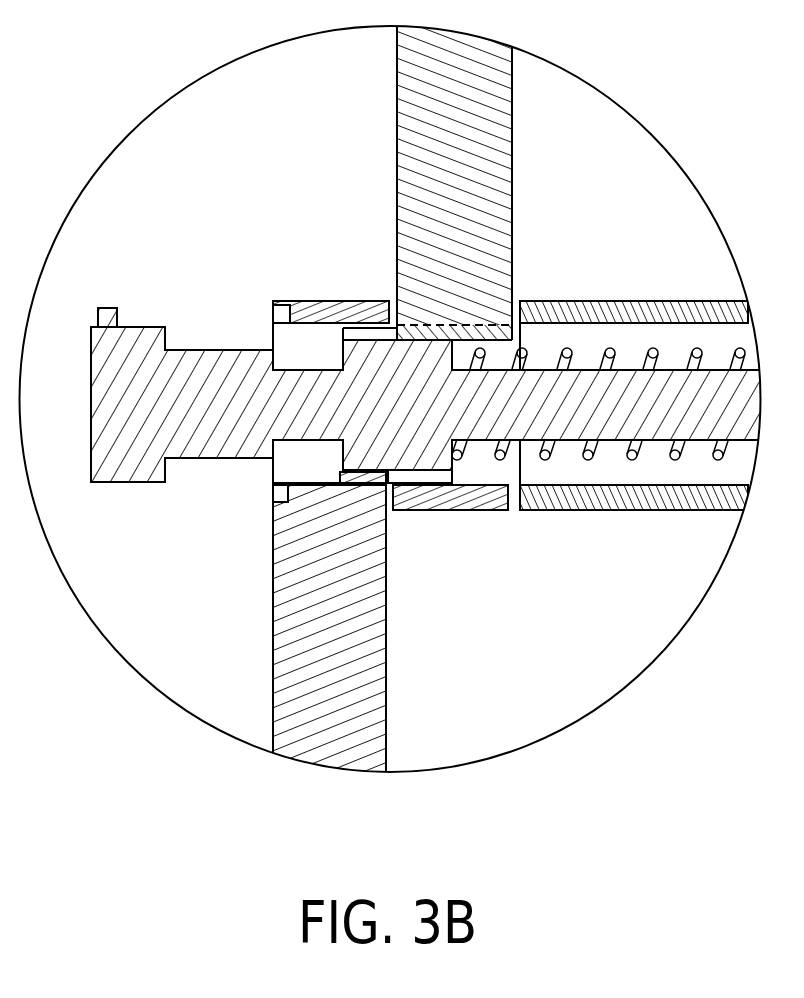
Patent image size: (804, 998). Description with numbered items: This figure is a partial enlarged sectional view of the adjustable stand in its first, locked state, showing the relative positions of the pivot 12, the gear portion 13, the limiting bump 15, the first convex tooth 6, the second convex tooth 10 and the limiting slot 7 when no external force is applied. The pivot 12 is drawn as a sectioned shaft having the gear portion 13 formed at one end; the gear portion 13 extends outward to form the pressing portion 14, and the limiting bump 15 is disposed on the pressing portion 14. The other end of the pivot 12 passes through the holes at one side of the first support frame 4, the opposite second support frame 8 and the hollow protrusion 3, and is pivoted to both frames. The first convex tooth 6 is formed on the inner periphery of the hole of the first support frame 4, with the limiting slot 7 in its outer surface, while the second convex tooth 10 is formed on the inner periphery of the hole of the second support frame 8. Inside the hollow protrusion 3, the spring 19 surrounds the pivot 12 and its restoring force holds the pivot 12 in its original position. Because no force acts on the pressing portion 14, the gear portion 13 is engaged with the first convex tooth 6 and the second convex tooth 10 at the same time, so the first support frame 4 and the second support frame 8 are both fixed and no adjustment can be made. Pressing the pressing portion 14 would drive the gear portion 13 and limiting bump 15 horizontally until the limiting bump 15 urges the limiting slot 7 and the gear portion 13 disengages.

The hollow protrusion 3 is at (549, 500).
The first support frame 4 is at (313, 652).
The first convex tooth 6 is at (360, 483).
The limiting slot 7 is at (271, 320).
The second support frame 8 is at (447, 118).
The second convex tooth 10 is at (493, 323).
The pivot 12 is at (612, 423).
The gear portion 13 is at (381, 352).
The pressing portion 14 is at (121, 447).
The limiting bump 15 is at (111, 326).
The spring 19 is at (567, 352).